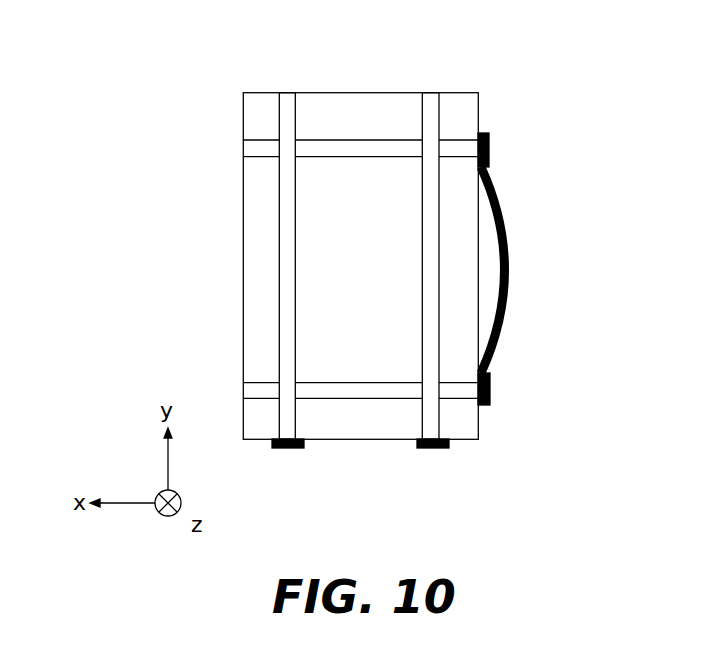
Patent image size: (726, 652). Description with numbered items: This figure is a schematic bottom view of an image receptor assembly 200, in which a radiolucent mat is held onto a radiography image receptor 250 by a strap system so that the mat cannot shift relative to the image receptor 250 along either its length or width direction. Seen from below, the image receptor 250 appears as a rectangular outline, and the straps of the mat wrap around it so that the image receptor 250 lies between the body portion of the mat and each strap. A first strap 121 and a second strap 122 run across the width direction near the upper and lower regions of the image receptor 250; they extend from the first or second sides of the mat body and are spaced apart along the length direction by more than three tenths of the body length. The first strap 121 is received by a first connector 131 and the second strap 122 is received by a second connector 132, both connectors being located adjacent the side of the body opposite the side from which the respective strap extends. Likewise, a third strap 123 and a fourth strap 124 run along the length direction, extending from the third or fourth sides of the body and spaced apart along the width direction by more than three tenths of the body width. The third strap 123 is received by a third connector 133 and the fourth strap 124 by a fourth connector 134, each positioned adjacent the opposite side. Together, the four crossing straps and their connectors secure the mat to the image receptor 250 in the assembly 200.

The image receptor assembly 200 is at (152, 70).
The radiography image receptor 250 is at (258, 268).
The first strap 121 is at (455, 148).
The second strap 122 is at (455, 390).
The third strap 123 is at (430, 112).
The fourth strap 124 is at (286, 112).
The first connector 131 is at (487, 167).
The second connector 132 is at (491, 405).
The third connector 133 is at (437, 448).
The fourth connector 134 is at (292, 448).